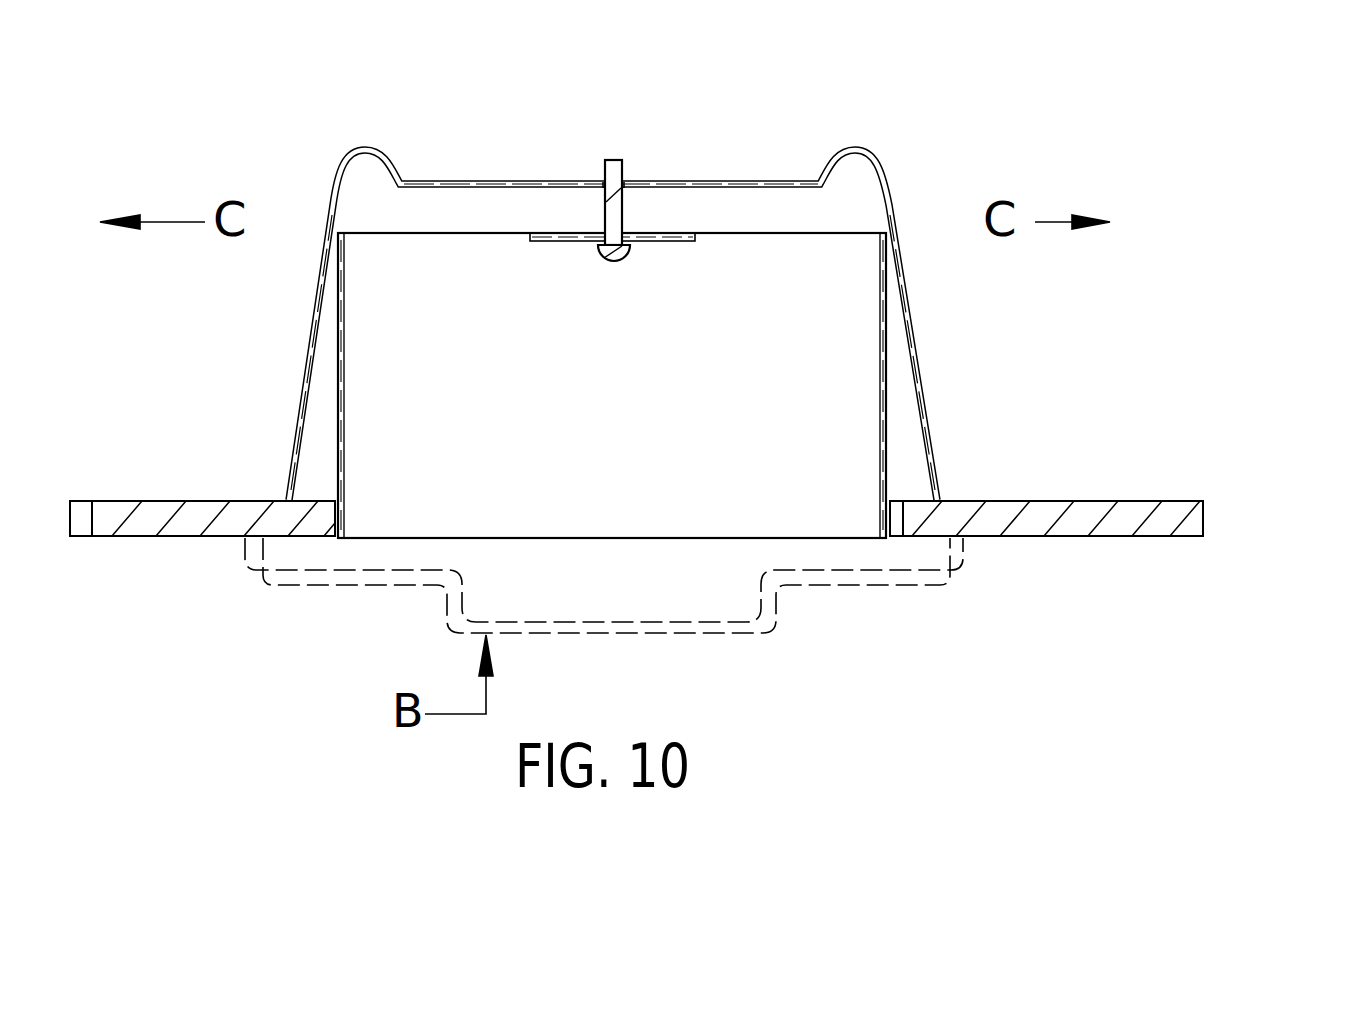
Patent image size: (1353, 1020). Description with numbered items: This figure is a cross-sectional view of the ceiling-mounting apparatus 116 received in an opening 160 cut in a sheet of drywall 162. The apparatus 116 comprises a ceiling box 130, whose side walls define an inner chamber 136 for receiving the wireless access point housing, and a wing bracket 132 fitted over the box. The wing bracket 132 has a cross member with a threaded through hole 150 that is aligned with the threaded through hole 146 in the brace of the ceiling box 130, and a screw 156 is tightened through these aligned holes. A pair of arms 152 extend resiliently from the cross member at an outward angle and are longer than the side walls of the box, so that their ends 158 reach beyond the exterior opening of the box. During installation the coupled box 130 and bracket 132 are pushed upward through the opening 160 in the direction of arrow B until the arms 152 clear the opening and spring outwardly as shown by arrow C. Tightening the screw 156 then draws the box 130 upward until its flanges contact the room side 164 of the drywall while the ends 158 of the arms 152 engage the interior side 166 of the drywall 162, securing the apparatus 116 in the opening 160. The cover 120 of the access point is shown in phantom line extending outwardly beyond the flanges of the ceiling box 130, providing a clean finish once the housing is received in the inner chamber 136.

The ceiling-mounting apparatus 116 is at (702, 380).
The cover 120 is at (406, 588).
The ceiling box 130 is at (684, 434).
The wing bracket 132 is at (653, 298).
The inner chamber 136 is at (646, 461).
The threaded through hole 146 is at (695, 266).
The threaded through hole 150 is at (690, 186).
The arms 152 is at (620, 352).
The screw 156 is at (533, 154).
The ends of the arms 158 is at (619, 440).
The opening 160 is at (251, 573).
The drywall 162 is at (1120, 489).
The room side of the drywall 164 is at (1110, 568).
The interior side of the drywall 166 is at (642, 479).